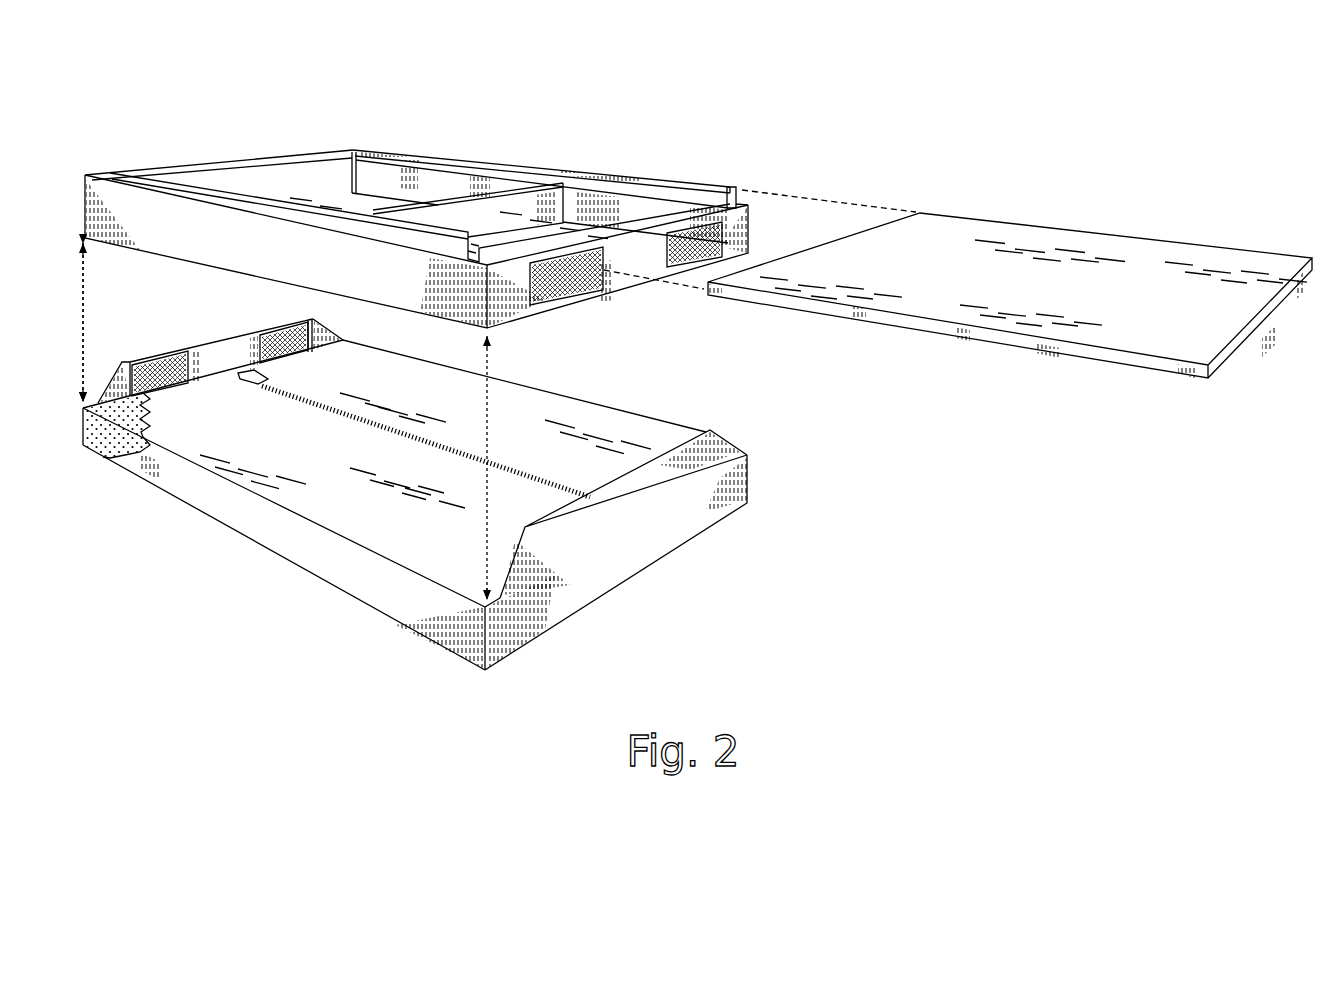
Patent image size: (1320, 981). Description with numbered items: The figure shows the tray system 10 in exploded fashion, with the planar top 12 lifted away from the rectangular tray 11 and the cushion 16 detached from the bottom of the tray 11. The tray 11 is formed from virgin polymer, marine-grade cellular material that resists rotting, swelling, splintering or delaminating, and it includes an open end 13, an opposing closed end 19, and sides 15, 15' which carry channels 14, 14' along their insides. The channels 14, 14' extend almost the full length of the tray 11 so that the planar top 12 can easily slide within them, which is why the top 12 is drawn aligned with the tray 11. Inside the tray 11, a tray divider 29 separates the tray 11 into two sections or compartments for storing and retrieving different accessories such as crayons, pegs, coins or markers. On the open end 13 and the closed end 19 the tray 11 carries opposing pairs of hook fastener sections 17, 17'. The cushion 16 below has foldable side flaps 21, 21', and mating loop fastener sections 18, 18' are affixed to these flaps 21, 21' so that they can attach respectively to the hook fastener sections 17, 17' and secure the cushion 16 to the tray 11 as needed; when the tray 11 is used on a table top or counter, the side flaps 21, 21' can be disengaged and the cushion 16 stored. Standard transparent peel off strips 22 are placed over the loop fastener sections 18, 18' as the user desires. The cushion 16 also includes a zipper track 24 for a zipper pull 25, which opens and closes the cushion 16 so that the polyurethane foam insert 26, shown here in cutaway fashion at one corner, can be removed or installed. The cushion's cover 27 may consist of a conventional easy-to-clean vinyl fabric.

The tray system 10 is at (275, 106).
The rectangular tray 11 is at (611, 177).
The planar top 12 is at (1027, 288).
The open end 13 is at (740, 184).
The channel 14 is at (494, 227).
The channel 14' is at (542, 183).
The side 15 is at (416, 239).
The side 15' is at (421, 159).
The cushion 16 is at (660, 418).
The hook fastener section 17 is at (617, 291).
The hook fastener section 17' is at (728, 244).
The loop fastener section 18 is at (156, 357).
The loop fastener section 18' is at (275, 325).
The closed end 19 is at (212, 163).
The foldable side flap 21 is at (623, 514).
The foldable side flap 21' is at (221, 357).
The peel off strip 22 is at (126, 374).
The zipper track 24 is at (508, 470).
The zipper pull 25 is at (258, 380).
The polyurethane foam insert 26 is at (112, 447).
The cover 27 is at (348, 576).
The tray divider 29 is at (514, 194).